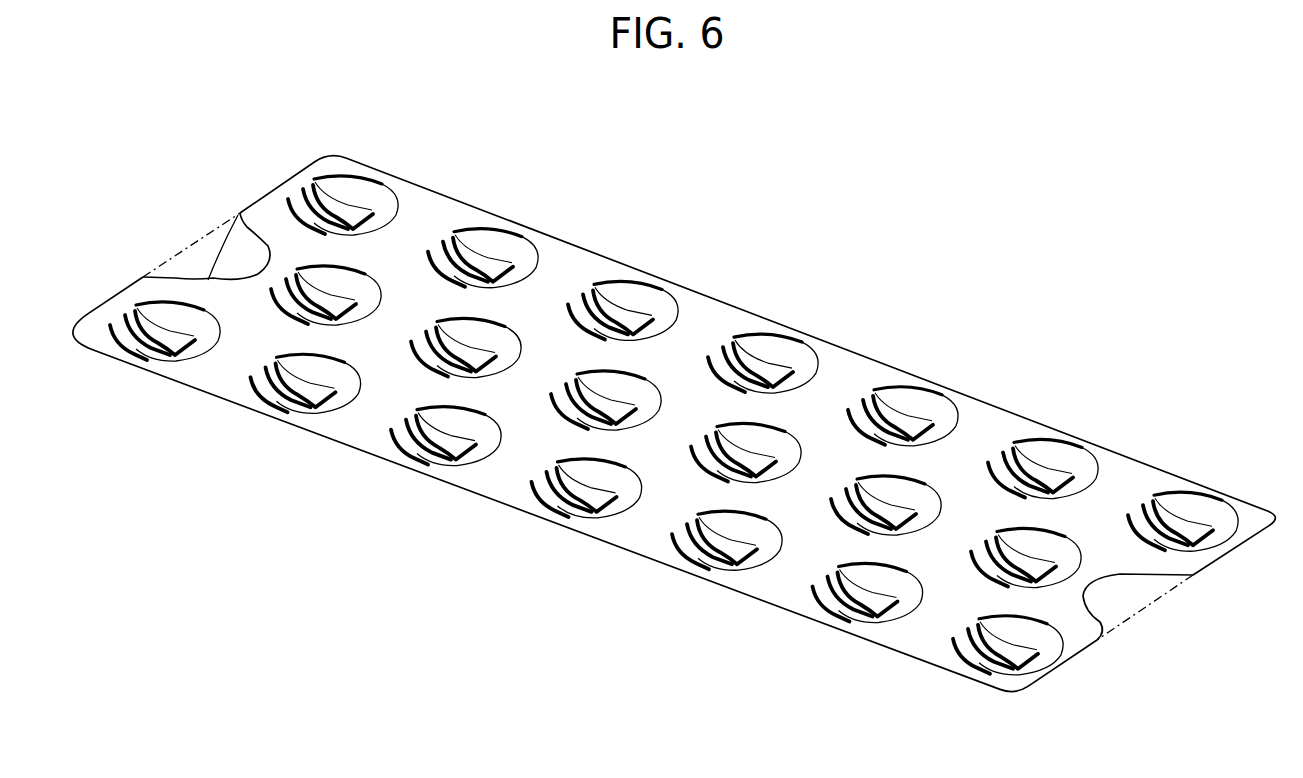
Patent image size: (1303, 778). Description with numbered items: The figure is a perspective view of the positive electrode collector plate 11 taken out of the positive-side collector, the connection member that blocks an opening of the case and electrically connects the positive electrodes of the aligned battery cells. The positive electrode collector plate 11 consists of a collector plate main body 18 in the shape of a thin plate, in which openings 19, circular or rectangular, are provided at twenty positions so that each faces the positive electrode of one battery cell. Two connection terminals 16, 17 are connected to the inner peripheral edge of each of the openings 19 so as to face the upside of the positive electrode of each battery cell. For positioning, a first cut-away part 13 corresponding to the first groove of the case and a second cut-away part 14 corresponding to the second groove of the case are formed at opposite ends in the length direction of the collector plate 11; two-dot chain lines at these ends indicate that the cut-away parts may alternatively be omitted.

The positive electrode collector plate 11 is at (674, 425).
The first cut-away part 13 is at (1123, 577).
The second cut-away part 14 is at (240, 213).
The connection terminal 16 is at (437, 268).
The connection terminal 17 is at (480, 256).
The collector plate main body 18 is at (988, 420).
The openings 19 is at (540, 364).